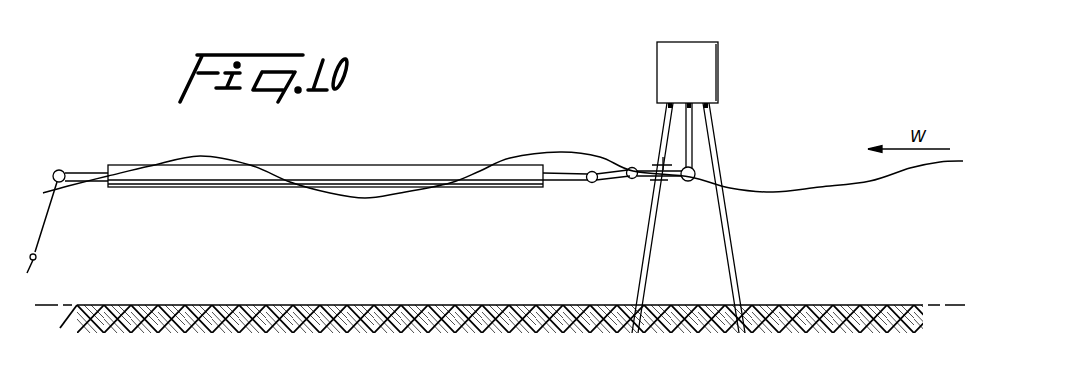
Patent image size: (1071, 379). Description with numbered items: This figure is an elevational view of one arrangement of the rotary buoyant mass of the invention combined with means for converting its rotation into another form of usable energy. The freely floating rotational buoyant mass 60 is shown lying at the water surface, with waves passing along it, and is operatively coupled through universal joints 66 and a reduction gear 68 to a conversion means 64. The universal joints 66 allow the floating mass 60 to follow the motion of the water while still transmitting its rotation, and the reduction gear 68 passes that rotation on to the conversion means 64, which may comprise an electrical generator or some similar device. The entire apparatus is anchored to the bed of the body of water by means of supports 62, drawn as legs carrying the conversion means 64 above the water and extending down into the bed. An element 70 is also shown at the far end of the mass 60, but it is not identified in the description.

The freely floating rotational buoyant mass 60 is at (398, 170).
The supports 62 is at (737, 258).
The conversion means 64 is at (715, 69).
The universal joints 66 is at (631, 167).
The reduction gear 68 is at (695, 170).
The anchor stake 70 is at (36, 256).